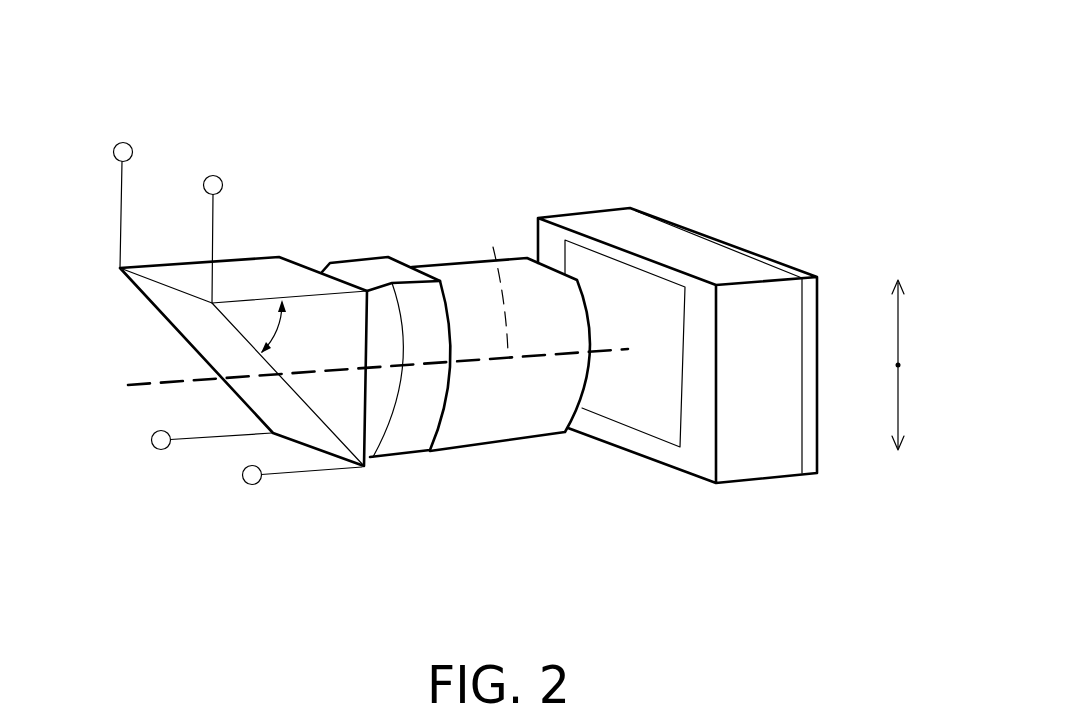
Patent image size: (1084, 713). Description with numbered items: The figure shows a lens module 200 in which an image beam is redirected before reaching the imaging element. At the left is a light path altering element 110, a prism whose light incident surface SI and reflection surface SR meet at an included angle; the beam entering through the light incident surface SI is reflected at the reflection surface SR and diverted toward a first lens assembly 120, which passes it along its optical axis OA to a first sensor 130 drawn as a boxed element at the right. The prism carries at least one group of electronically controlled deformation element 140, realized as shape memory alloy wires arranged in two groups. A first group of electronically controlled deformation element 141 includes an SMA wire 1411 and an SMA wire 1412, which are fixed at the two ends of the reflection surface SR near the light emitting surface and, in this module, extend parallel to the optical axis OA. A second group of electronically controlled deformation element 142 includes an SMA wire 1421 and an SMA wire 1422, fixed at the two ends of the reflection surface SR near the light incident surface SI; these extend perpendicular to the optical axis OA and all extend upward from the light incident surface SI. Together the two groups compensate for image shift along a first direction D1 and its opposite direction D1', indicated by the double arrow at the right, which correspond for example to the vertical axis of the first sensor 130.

The lens module 200 is at (895, 554).
The light path altering element 110 is at (366, 440).
The first lens assembly 120 is at (493, 413).
The first sensor 130 is at (745, 453).
The electronically controlled deformation element 140 is at (208, 337).
The first group of electronically controlled deformation element 141 is at (285, 584).
The second group of electronically controlled deformation element 142 is at (208, 84).
The SMA wire 1411 is at (188, 440).
The SMA wire 1412 is at (280, 473).
The SMA wire 1421 is at (120, 190).
The SMA wire 1422 is at (212, 223).
The light incident surface SI is at (262, 259).
The reflection surface SR is at (179, 331).
The optical axis OA is at (378, 295).
The first direction D1 is at (890, 387).
The opposite direction D1' is at (896, 254).